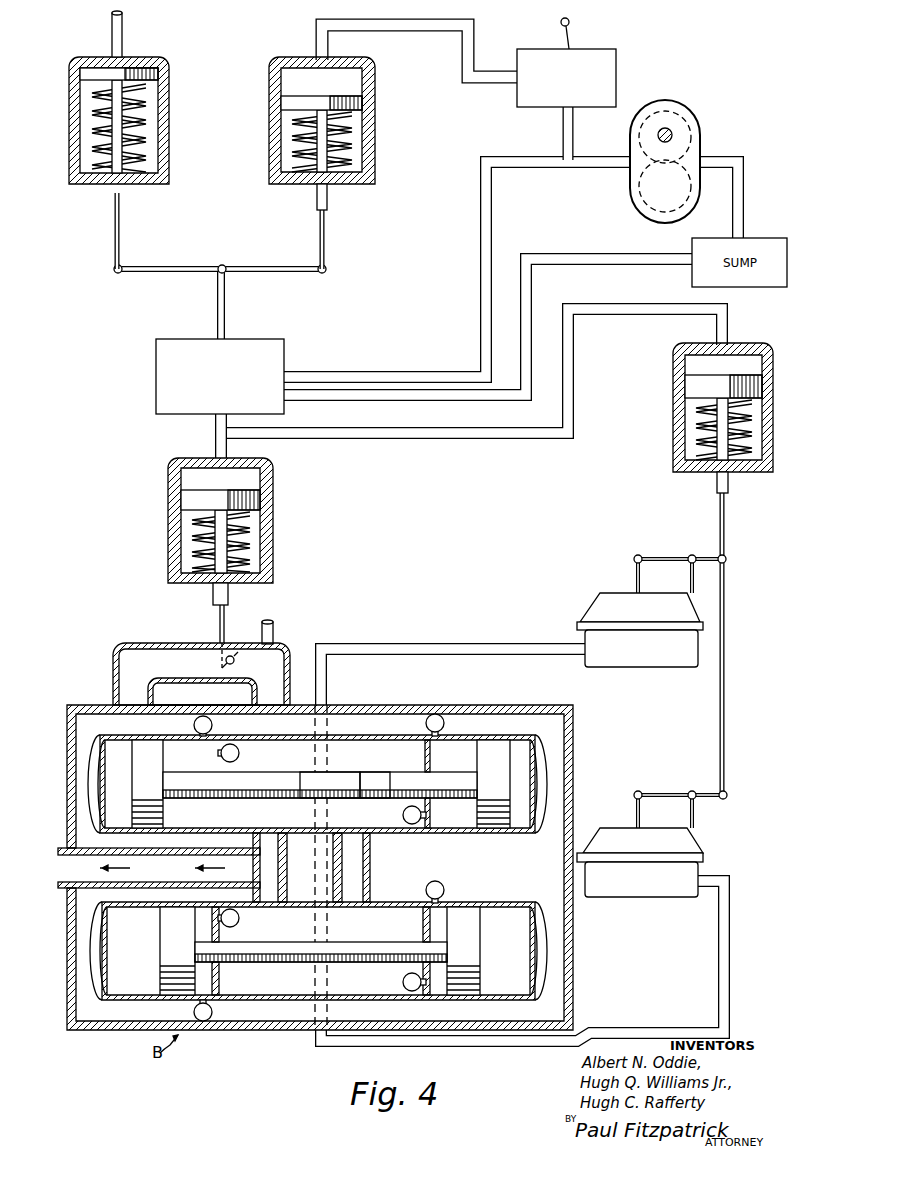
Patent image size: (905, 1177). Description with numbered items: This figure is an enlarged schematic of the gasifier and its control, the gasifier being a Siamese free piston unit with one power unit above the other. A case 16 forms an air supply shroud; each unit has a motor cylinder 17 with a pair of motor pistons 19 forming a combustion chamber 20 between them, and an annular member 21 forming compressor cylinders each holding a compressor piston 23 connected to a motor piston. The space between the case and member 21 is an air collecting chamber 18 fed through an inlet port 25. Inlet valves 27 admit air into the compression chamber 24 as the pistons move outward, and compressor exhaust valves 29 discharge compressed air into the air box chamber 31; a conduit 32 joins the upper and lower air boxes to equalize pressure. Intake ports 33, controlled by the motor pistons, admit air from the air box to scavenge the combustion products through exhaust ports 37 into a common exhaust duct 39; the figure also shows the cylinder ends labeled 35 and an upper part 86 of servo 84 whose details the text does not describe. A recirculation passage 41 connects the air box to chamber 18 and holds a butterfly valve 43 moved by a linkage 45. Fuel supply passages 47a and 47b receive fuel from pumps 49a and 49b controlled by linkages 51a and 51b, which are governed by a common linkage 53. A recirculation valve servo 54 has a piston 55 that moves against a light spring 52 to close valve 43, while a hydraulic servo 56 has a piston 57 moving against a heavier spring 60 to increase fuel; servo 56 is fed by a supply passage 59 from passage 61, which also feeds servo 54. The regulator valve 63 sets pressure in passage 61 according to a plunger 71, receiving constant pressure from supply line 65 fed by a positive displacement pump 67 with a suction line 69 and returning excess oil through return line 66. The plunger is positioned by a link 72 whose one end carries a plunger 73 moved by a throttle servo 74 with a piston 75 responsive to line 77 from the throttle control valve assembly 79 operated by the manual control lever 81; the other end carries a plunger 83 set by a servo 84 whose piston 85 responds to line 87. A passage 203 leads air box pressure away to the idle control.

The case 16 is at (420, 705).
The motor cylinder 17 is at (350, 798).
The air collecting chamber 18 is at (573, 825).
The motor pistons 19 is at (340, 772).
The combustion chamber 20 is at (315, 798).
The annular member 21 is at (97, 915).
The compressor piston 23 is at (163, 812).
The compression chamber 24 is at (163, 760).
The inlet port 25 is at (525, 705).
The inlet valves 27 is at (212, 725).
The compressor exhaust valves 29 is at (239, 752).
The air box chamber 31 is at (297, 745).
The conduit 32 is at (345, 880).
The intake ports 33 is at (370, 765).
The cylinder 35 is at (105, 725).
The exhaust ports 37 is at (260, 798).
The common exhaust duct 39 is at (58, 876).
The recirculation passage 41 is at (120, 668).
The valve 43 is at (232, 650).
The linkage 45 is at (218, 628).
The fuel supply passage 47a is at (327, 678).
The fuel supply passage 47b is at (455, 1050).
The fuel pump 49a is at (668, 665).
The fuel pump 49b is at (665, 895).
The fuel pump linkage 51a is at (655, 562).
The fuel pump linkage 51b is at (658, 795).
The spring 52 is at (252, 548).
The common linkage 53 is at (727, 625).
The recirculation valve control servo 54 is at (167, 520).
The piston 55 is at (260, 500).
The hydraulic servo 56 is at (666, 451).
The pressure responsive piston 57 is at (685, 388).
The supply passage 59 is at (470, 440).
The spring 60 is at (740, 452).
The passage 61 is at (215, 428).
The regulator valve 63 is at (156, 388).
The supply line 65 is at (345, 372).
The return line 66 is at (513, 400).
The positive displacement pump 67 is at (648, 205).
The suction line 69 is at (738, 185).
The plunger 71 is at (225, 300).
The link 72 is at (250, 268).
The plunger 73 is at (325, 232).
The throttle servo 74 is at (260, 128).
The piston 75 is at (362, 103).
The line 77 is at (431, 26).
The throttle control valve assembly 79 is at (614, 56).
The manual control lever 81 is at (571, 24).
The plunger 83 is at (120, 228).
The servo 84 is at (61, 127).
The piston 85 is at (158, 74).
The spring 86 is at (150, 130).
The line 87 is at (122, 30).
The passage 203 is at (273, 628).